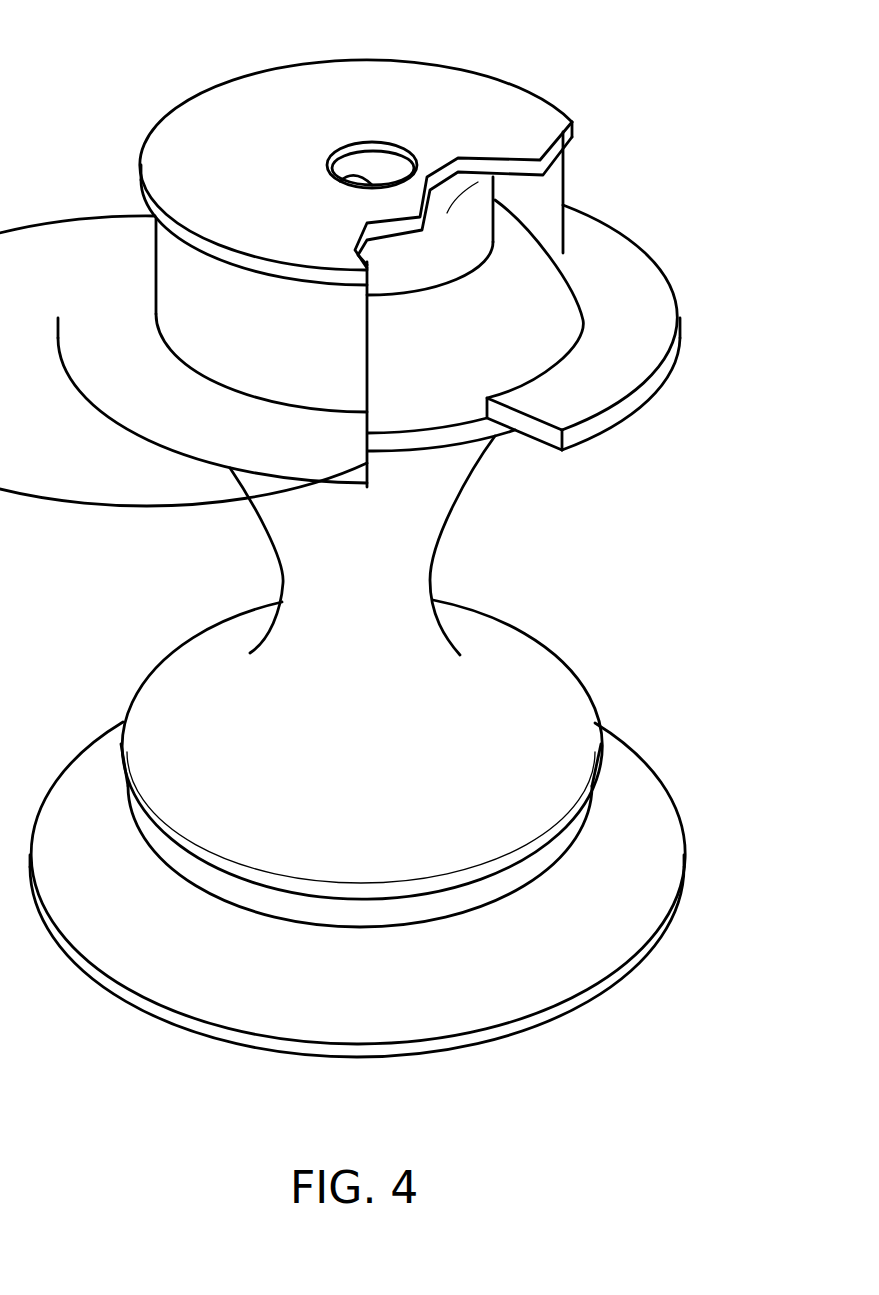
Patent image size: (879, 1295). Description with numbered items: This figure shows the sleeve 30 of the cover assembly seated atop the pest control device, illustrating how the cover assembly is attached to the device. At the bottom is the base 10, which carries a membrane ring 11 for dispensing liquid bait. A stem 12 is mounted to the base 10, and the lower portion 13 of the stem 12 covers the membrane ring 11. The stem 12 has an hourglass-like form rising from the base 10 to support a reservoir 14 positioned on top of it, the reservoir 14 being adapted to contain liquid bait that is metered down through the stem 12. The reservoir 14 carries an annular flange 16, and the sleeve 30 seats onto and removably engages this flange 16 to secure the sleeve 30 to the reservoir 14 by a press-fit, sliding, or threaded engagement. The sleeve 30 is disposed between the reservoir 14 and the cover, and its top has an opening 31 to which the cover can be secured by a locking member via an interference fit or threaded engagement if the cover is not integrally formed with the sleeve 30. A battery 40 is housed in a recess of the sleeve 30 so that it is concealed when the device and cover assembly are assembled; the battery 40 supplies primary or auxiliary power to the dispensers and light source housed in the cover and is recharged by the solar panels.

The base 10 is at (577, 918).
The membrane ring 11 is at (530, 863).
The stem 12 is at (387, 531).
The lower portion 13 is at (123, 717).
The reservoir 14 is at (525, 300).
The annular flange 16 is at (473, 433).
The sleeve 30 is at (217, 140).
The opening 31 is at (383, 150).
The battery 40 is at (455, 247).